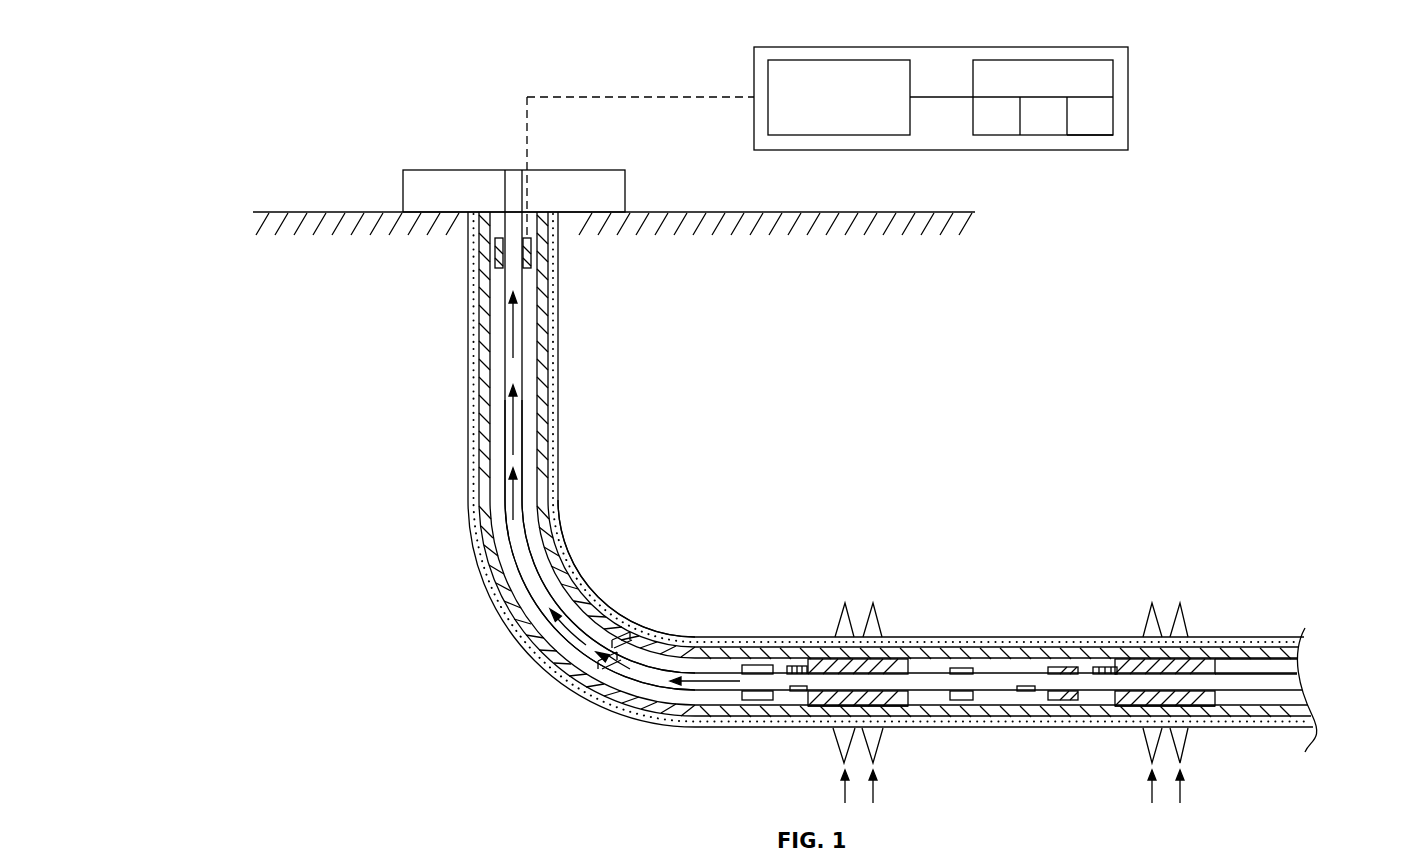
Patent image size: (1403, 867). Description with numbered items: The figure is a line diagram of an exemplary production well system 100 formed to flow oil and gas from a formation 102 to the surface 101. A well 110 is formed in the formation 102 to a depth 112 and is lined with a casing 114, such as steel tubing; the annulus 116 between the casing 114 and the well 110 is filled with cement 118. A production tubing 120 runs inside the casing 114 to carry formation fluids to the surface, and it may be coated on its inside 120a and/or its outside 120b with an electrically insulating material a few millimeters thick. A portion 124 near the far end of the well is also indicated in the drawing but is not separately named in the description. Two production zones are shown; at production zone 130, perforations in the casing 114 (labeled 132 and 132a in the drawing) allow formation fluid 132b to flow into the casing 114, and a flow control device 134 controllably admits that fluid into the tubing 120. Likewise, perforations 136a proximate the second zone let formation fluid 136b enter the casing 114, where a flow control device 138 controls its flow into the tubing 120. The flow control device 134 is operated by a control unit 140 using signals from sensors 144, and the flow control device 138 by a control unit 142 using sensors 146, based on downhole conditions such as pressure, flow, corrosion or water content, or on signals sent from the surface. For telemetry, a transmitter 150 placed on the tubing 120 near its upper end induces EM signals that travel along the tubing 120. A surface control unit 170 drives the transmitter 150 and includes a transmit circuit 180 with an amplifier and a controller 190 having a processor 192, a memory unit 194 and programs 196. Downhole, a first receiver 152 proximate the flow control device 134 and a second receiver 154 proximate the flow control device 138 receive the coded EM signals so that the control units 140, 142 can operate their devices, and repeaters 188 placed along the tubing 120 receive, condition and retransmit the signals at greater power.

The production well system 100 is at (352, 88).
The surface 101 is at (885, 203).
The formation 102 is at (937, 394).
The well 110 is at (558, 320).
The depth 112 is at (1302, 643).
The casing 114 is at (540, 362).
The annulus 116 is at (572, 550).
The cement 118 is at (662, 630).
The production tubing 120 is at (523, 397).
The inside of tubing 120a is at (545, 600).
The outside of tubing 120b is at (527, 517).
The annulus 124 is at (1177, 667).
The production zone 130 is at (1197, 619).
The perforations 132 is at (887, 621).
The perforations 132a is at (1185, 748).
The formation fluid 132b is at (1185, 788).
The flow control device 134 is at (1125, 725).
The perforations 136a is at (875, 747).
The formation fluid 136b is at (875, 787).
The flow control device 138 is at (838, 712).
The control unit 140 is at (1108, 665).
The control unit 142 is at (800, 665).
The sensors 144 is at (1023, 695).
The sensors 146 is at (762, 700).
The transmitter 150 is at (531, 253).
The first receiver 152 is at (1065, 667).
The second receiver 154 is at (757, 665).
The control unit 170 is at (1128, 107).
The transmit circuit 180 is at (768, 85).
The repeaters 188 is at (618, 643).
The controller 190 is at (1113, 85).
The processor 192 is at (988, 123).
The memory unit 194 is at (1038, 123).
The programs 196 is at (1085, 123).